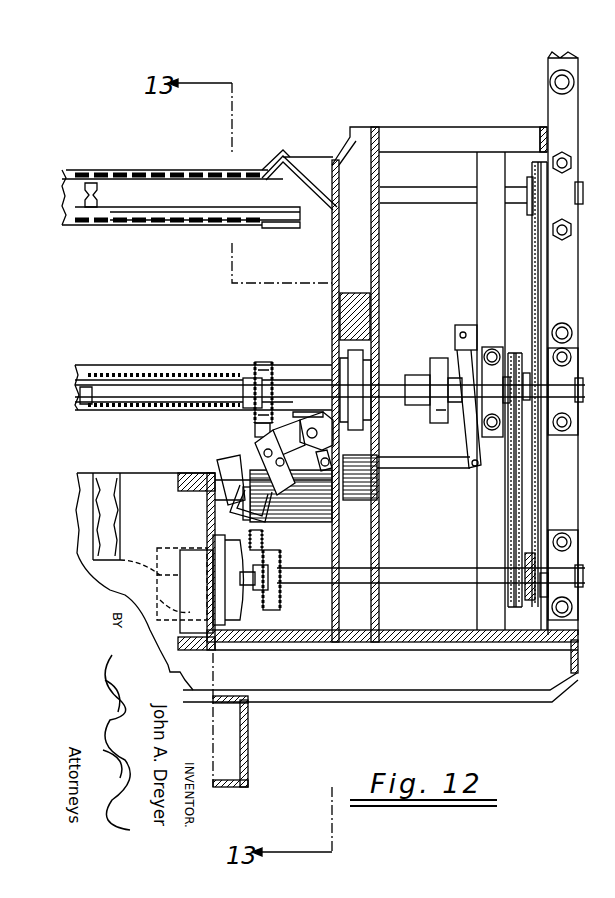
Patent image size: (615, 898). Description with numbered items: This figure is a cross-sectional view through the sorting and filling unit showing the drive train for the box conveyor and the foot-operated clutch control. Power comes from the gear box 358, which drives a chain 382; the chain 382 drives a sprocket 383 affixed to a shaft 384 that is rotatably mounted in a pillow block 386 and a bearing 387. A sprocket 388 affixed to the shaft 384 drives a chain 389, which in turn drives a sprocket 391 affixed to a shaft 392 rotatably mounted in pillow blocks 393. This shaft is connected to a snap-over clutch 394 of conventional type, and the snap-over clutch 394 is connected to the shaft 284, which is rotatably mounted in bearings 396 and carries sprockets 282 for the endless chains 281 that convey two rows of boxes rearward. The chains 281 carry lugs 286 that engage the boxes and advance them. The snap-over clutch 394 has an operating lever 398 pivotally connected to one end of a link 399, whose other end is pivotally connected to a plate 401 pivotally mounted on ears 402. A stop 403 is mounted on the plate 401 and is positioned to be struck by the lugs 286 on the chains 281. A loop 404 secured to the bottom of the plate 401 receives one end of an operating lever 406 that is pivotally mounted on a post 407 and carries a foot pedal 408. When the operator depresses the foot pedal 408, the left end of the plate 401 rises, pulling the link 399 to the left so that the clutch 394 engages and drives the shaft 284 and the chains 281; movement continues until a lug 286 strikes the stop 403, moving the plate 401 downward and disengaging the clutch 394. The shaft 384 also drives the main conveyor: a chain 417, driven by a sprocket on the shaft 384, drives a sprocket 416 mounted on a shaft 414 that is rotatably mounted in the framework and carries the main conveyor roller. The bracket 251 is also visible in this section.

The gear box 358 is at (297, 222).
The shaft 414 is at (447, 203).
The sprocket 416 is at (527, 195).
The chain 417 is at (540, 245).
The snap-over clutch 394 is at (448, 327).
The shaft 284 is at (395, 385).
The pillow blocks 393 is at (492, 350).
The sprocket 391 is at (512, 375).
The shaft 392 is at (582, 392).
The endless chains 281 is at (261, 362).
The sprockets 282 is at (243, 380).
The bearings 396 is at (335, 340).
The ears 402 is at (303, 415).
The lugs 286 is at (252, 432).
The operating lever 406 is at (222, 463).
The stop 403 is at (258, 450).
The plate 401 is at (255, 480).
The loop 404 is at (210, 512).
The post 407 is at (262, 540).
The foot pedal 408 is at (118, 596).
The sprocket 383 is at (278, 578).
The chain 382 is at (272, 610).
The bearing 387 is at (242, 600).
The shaft 384 is at (420, 583).
The link 399 is at (428, 470).
The operating lever 398 is at (482, 470).
The chain 389 is at (512, 520).
The sprocket 388 is at (535, 603).
The pillow block 386 is at (565, 575).
The channel 251 is at (250, 740).